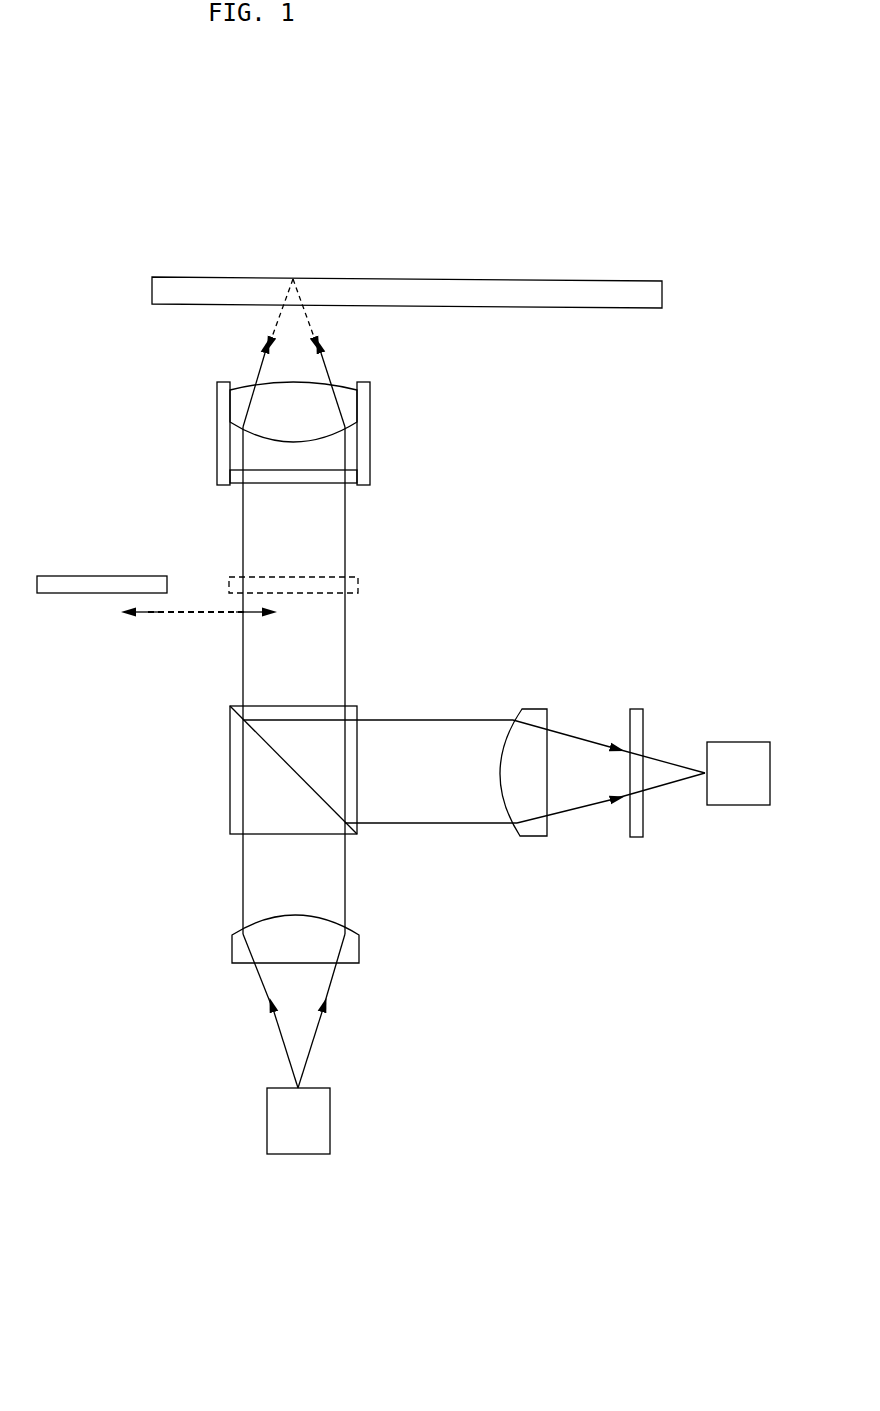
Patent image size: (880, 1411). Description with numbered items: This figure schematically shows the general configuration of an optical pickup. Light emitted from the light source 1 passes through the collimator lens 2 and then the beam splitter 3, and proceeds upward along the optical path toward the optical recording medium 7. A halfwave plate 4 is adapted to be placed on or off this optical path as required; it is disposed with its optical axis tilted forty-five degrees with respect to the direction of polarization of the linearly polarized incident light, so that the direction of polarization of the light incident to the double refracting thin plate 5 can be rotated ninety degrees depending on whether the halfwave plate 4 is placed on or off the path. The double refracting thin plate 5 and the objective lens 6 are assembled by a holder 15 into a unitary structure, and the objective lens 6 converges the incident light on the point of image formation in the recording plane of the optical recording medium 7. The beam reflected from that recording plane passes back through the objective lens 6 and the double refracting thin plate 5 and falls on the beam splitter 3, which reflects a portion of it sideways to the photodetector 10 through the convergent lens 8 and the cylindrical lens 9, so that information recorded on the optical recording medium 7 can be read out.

The light source 1 is at (278, 1135).
The collimator lens 2 is at (237, 952).
The beam splitter 3 is at (235, 818).
The halfwave plate 4 is at (93, 588).
The double refracting thin plate 5 is at (328, 477).
The objective lens 6 is at (343, 400).
The optical recording medium 7 is at (467, 285).
The convergent lens 8 is at (533, 832).
The cylindrical lens 9 is at (637, 833).
The photodetector 10 is at (738, 798).
The holder 15 is at (227, 432).